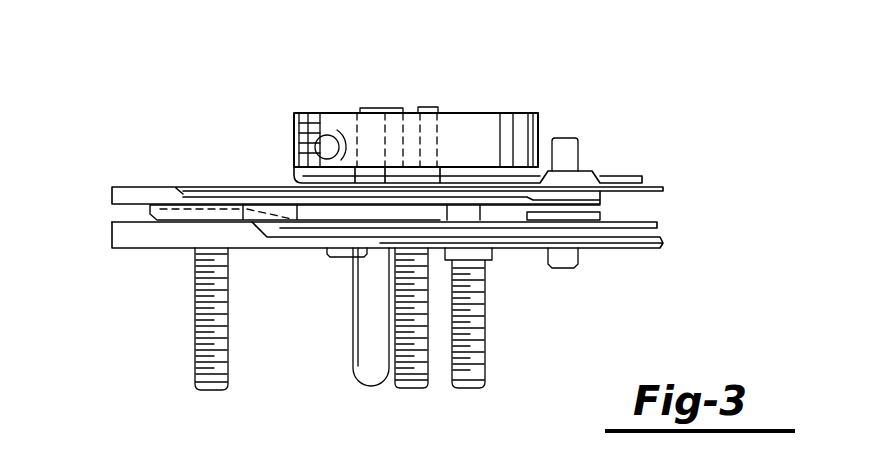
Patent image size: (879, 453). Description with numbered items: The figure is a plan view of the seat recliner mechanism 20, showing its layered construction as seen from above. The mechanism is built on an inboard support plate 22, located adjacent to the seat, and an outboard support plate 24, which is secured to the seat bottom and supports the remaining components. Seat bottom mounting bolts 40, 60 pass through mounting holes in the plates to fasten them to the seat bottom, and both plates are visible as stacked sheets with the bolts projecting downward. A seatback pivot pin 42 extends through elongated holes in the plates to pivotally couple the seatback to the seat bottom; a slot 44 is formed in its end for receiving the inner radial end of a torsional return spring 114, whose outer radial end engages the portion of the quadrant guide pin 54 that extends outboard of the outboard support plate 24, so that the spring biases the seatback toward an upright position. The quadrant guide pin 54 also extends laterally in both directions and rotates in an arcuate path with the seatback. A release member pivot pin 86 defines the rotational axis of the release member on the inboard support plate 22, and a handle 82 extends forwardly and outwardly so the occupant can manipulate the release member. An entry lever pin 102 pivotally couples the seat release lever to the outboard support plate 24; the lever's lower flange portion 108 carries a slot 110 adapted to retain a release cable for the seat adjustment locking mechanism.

The seat recliner mechanism 20 is at (582, 95).
The inboard support plate 22 is at (618, 246).
The outboard support plate 24 is at (142, 186).
The seat bottom mounting bolt 40 is at (477, 353).
The seatback pivot pin 42 is at (408, 388).
The slot 44 is at (430, 113).
The quadrant guide pin 54 is at (356, 312).
The seat bottom mounting bolt 60 is at (210, 313).
The handle 82 is at (643, 223).
The release member pivot pin 86 is at (563, 268).
The entry lever pin 102 is at (572, 158).
The lower flange portion 108 is at (323, 112).
The slot 110 is at (293, 152).
The torsional return spring 114 is at (477, 120).